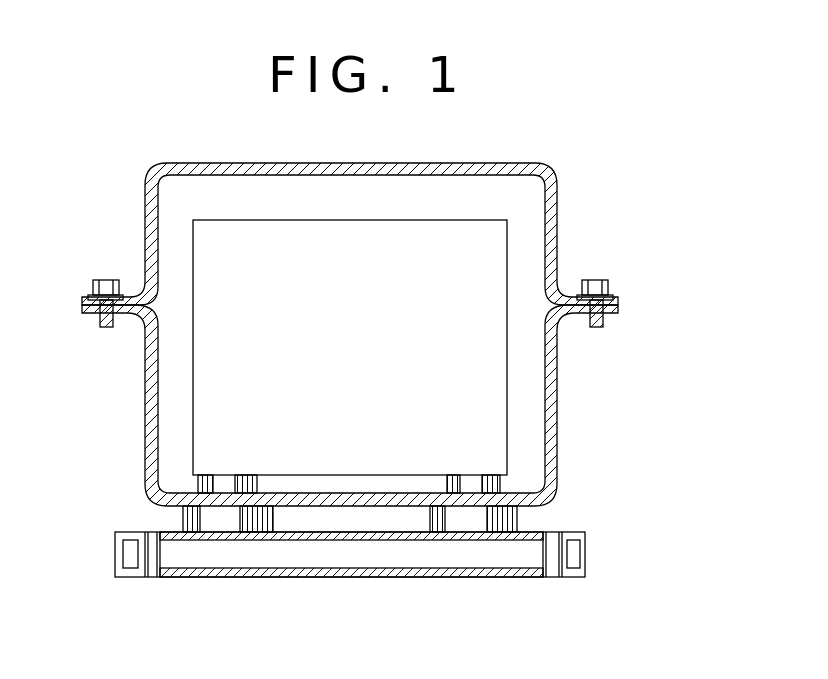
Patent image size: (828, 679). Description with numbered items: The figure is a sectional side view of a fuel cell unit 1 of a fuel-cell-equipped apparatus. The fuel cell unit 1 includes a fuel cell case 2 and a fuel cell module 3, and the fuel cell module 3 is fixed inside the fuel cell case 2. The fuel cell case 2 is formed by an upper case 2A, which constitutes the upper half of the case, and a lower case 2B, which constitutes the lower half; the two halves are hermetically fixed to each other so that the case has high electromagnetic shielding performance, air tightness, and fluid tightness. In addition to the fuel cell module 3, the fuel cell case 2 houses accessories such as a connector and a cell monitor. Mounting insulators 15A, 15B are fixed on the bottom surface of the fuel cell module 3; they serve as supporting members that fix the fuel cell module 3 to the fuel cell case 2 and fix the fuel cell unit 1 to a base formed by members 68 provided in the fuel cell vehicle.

The fuel cell unit 1 is at (128, 186).
The fuel cell case 2 is at (558, 215).
The upper case 2A is at (557, 248).
The lower case 2B is at (557, 395).
The fuel cell module 3 is at (208, 278).
The mounting insulator 15A is at (233, 482).
The mounting insulator 15B is at (468, 482).
The member 68 is at (232, 558).